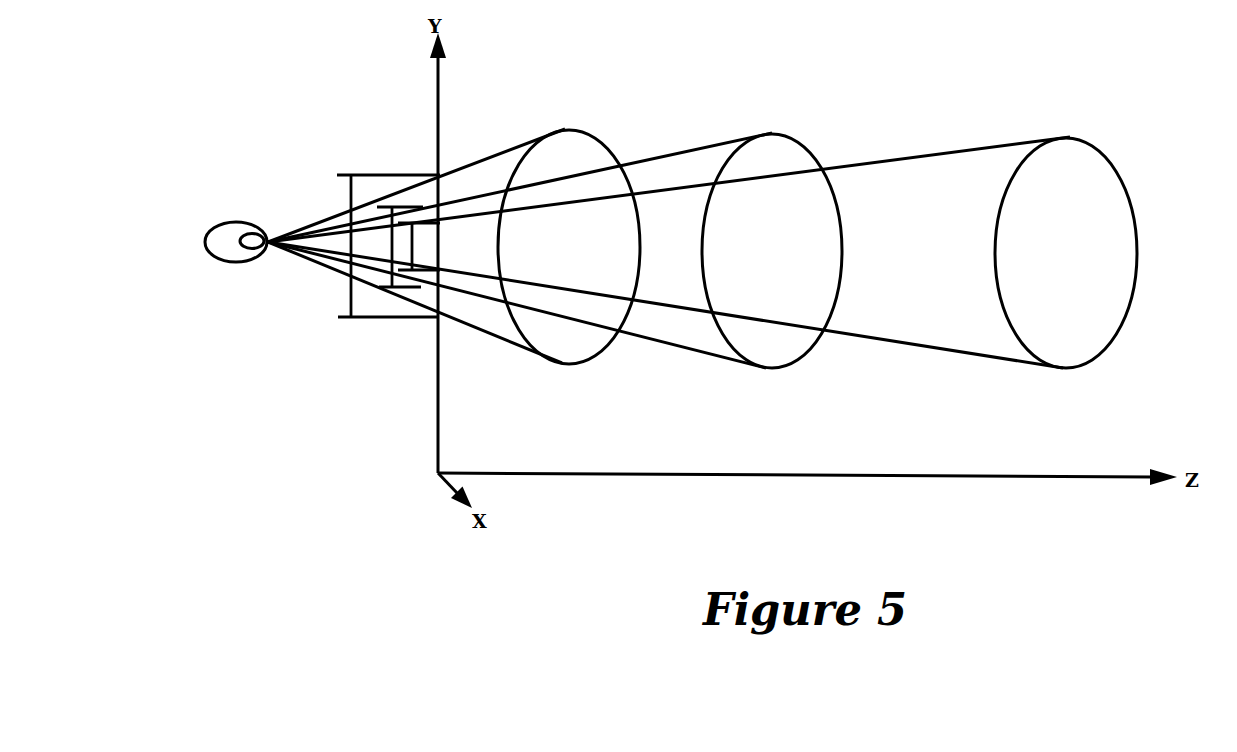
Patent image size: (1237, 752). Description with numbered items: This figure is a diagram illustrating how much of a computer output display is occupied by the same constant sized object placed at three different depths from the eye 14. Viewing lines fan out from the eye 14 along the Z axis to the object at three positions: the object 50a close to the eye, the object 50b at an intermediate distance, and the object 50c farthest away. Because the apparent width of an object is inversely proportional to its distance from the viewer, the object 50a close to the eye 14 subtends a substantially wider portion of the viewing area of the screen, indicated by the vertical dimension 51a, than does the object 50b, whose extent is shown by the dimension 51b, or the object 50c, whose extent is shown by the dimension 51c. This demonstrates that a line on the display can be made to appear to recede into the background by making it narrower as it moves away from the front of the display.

The eye 14 is at (232, 232).
The object close to the eye 50a is at (615, 253).
The object at intermediate depth 50b is at (828, 252).
The object at far depth 50c is at (1137, 248).
The vertical dimension of close object 51a is at (348, 292).
The vertical dimension of intermediate object 51b is at (392, 247).
The vertical dimension of far object 51c is at (442, 242).